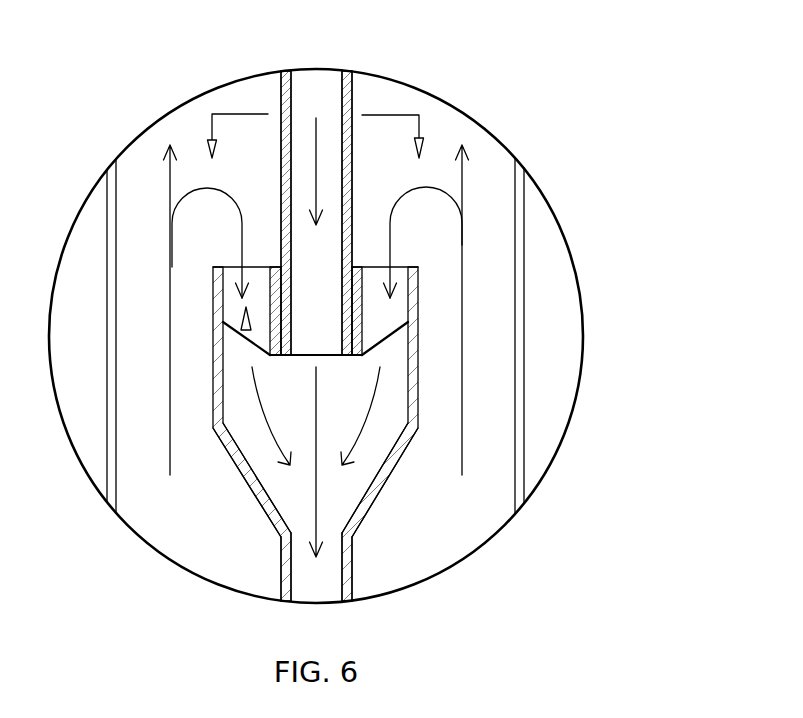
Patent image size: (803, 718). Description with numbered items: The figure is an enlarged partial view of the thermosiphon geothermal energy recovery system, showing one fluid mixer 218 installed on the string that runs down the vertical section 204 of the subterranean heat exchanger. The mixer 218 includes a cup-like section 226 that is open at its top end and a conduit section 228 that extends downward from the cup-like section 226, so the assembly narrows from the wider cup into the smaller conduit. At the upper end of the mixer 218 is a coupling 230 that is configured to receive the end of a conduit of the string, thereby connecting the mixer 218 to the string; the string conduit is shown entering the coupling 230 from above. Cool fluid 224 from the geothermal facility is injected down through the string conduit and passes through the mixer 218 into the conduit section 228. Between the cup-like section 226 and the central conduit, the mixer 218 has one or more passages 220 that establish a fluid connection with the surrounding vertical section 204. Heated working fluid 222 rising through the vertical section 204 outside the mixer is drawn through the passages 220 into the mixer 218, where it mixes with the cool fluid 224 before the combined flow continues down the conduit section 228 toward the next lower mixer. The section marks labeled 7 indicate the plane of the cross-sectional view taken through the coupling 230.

The vertical section 204 is at (130, 405).
The fluid mixer 218 is at (418, 417).
The passage 220 is at (246, 330).
The heated working fluid 222 is at (170, 267).
The cool fluid 224 is at (317, 152).
The cup-like section 226 is at (418, 358).
The conduit section 228 is at (352, 100).
The coupling 230 is at (353, 312).
The section line 7- 7 is at (316, 136).